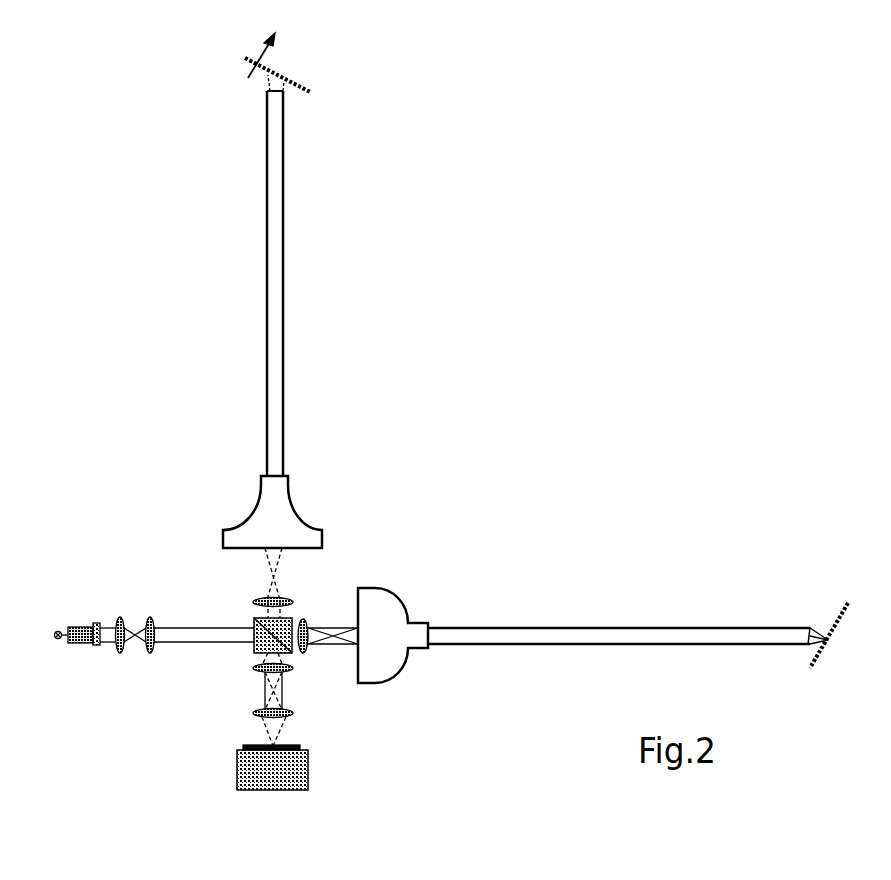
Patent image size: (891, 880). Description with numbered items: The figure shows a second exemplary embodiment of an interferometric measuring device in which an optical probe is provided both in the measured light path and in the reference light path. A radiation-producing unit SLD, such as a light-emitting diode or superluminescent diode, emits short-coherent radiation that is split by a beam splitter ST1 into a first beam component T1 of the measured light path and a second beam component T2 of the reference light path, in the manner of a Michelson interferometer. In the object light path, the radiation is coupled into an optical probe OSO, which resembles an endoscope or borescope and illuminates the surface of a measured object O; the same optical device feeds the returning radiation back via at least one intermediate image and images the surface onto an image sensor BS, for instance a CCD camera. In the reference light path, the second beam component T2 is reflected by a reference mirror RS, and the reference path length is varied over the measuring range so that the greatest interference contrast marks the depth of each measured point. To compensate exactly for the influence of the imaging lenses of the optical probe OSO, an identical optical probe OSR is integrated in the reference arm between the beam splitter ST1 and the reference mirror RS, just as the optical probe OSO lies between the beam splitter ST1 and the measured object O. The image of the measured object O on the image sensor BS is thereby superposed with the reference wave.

The reference mirror RS is at (297, 96).
The optical probe in the reference light path OSR is at (283, 297).
The second beam component T2 is at (277, 568).
The beam splitter ST1 is at (252, 613).
The first beam component T1 is at (331, 618).
The optical probe in the object light path OSO is at (538, 618).
The radiation-producing unit SLD is at (75, 645).
The image sensor BS is at (308, 765).
The measured object O is at (826, 648).